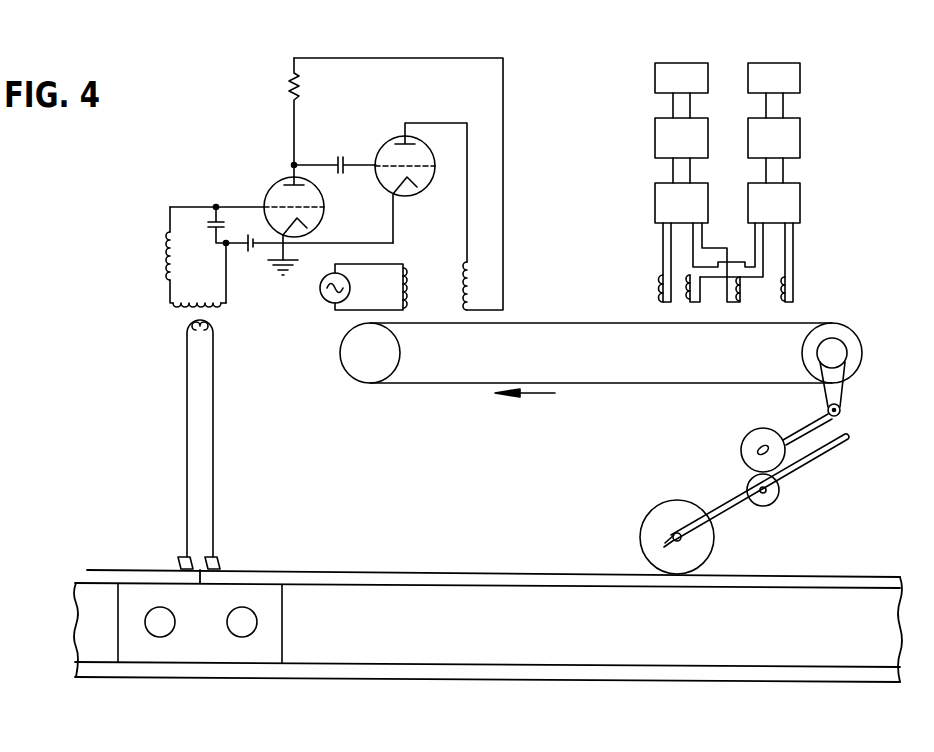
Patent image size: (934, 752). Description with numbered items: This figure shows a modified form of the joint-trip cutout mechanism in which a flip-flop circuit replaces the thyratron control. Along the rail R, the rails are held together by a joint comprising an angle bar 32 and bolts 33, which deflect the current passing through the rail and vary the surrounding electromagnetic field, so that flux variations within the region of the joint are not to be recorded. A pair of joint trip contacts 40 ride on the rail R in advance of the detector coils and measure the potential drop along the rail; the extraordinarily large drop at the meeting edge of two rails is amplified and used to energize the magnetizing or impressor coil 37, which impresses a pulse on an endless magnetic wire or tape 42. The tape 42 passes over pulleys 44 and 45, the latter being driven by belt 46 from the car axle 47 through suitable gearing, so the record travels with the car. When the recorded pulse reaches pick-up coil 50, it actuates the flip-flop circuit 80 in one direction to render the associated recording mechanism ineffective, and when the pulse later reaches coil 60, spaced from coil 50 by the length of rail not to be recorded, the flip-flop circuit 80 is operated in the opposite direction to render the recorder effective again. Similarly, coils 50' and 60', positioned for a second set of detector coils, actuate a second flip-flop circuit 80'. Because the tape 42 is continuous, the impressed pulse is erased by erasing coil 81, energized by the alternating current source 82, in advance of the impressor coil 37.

The flip-flop circuit 80 is at (506, 160).
The second flip-flop circuit 80' is at (683, 170).
The erasing coil 81 is at (408, 276).
The source of A. C. 82 is at (320, 295).
The impressor coil 37 is at (462, 306).
The pick-up coil 50 is at (633, 265).
The pick-up coil 50' is at (673, 317).
The turn-on coil 60 is at (728, 318).
The turn-on coil 60' is at (808, 269).
The endless magnetic wire or tape 42 is at (625, 385).
The pulley 44 is at (376, 375).
The pulley 45 is at (851, 338).
The belt 46 is at (848, 393).
The car axle 47 is at (735, 510).
The joint trip contacts 40 is at (219, 564).
The rail R is at (474, 600).
The angle bar 32 is at (200, 640).
The bolt 33 is at (157, 632).